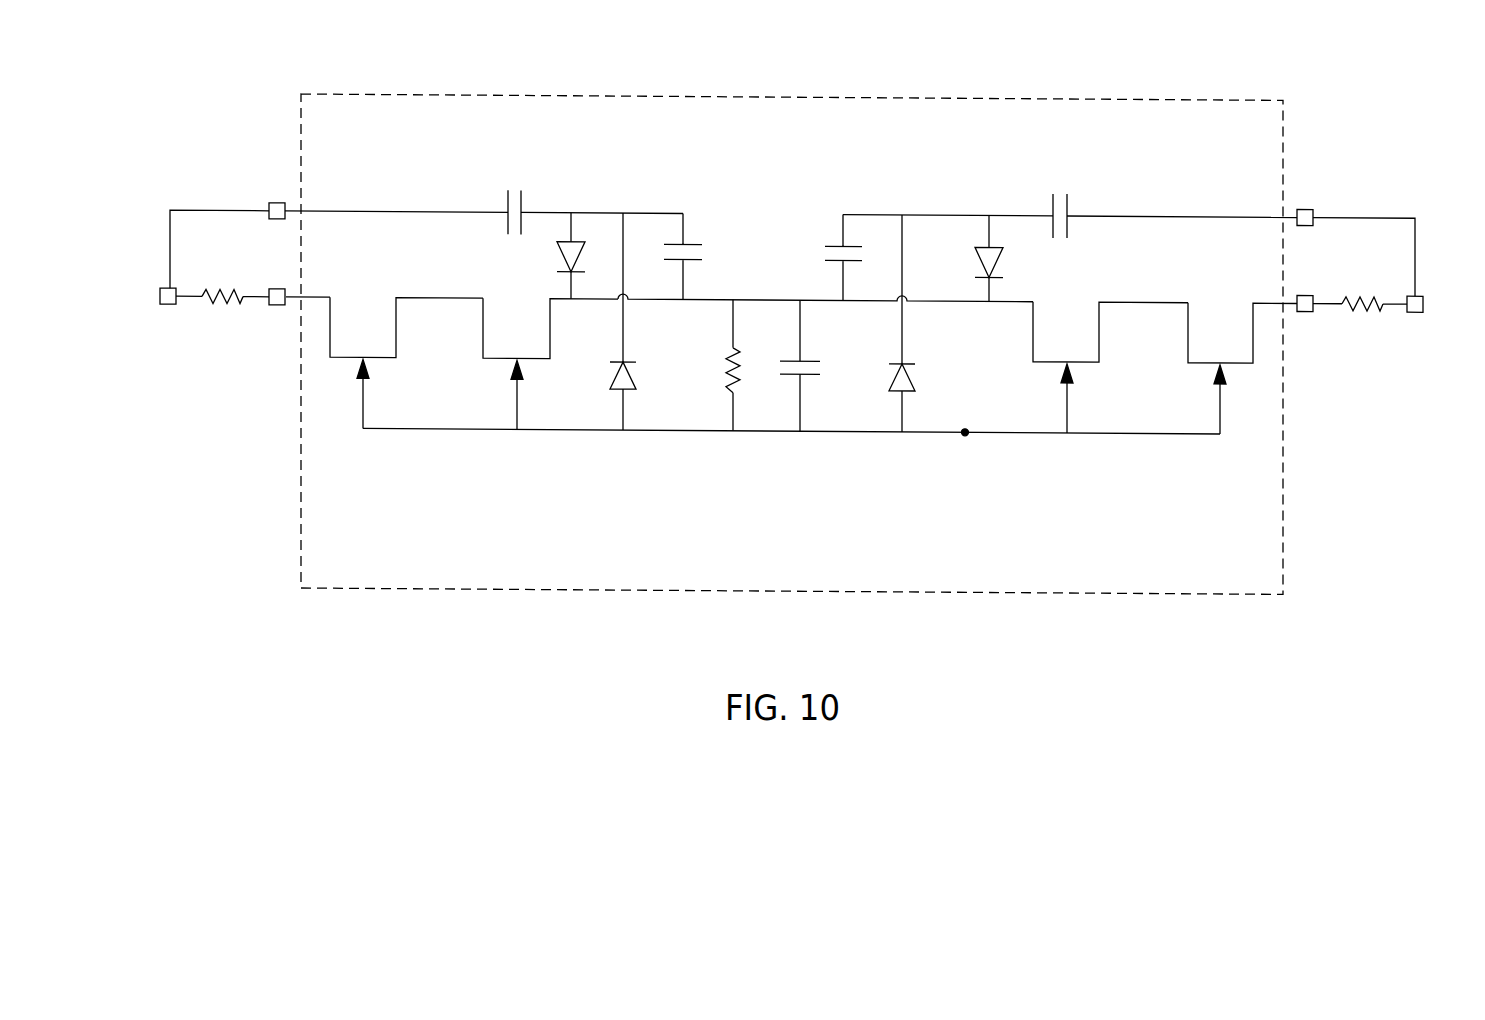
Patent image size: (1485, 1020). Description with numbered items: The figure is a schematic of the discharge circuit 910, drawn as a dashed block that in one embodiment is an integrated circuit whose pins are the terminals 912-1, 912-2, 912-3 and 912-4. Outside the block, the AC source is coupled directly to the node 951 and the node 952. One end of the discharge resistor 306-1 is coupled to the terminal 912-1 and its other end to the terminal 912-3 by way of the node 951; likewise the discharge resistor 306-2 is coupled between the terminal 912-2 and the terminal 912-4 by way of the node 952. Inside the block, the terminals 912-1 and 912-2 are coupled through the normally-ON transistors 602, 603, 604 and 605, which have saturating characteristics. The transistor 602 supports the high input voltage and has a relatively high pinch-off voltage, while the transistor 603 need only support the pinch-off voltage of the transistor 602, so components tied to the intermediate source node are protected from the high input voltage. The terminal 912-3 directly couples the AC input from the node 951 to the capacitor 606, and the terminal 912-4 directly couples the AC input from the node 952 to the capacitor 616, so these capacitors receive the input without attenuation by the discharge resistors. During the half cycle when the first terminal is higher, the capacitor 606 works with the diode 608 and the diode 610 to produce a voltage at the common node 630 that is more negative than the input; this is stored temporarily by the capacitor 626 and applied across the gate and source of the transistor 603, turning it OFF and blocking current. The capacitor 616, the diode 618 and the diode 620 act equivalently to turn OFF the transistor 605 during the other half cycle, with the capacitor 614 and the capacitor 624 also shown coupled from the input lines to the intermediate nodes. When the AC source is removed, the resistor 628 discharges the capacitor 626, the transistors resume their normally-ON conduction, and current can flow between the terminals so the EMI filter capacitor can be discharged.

The discharge circuit 910 is at (432, 94).
The terminal 912-1 is at (277, 305).
The terminal 912-2 is at (1305, 305).
The terminal 912-3 is at (277, 203).
The terminal 912-4 is at (1305, 203).
The node 951 is at (168, 305).
The node 952 is at (1415, 305).
The discharge resistor 306-1 is at (229, 290).
The discharge resistor 306-2 is at (1368, 270).
The transistor 602 is at (352, 293).
The transistor 603 is at (475, 338).
The transistor 604 is at (1207, 307).
The transistor 605 is at (1104, 347).
The capacitor 606 is at (500, 197).
The diode 608 is at (582, 228).
The diode 610 is at (636, 385).
The capacitor 614 is at (707, 246).
The capacitor 616 is at (1077, 198).
The diode 618 is at (973, 251).
The diode 620 is at (917, 366).
The capacitor 624 is at (823, 245).
The capacitor 626 is at (818, 362).
The resistor 628 is at (722, 367).
The common node 630 is at (965, 428).